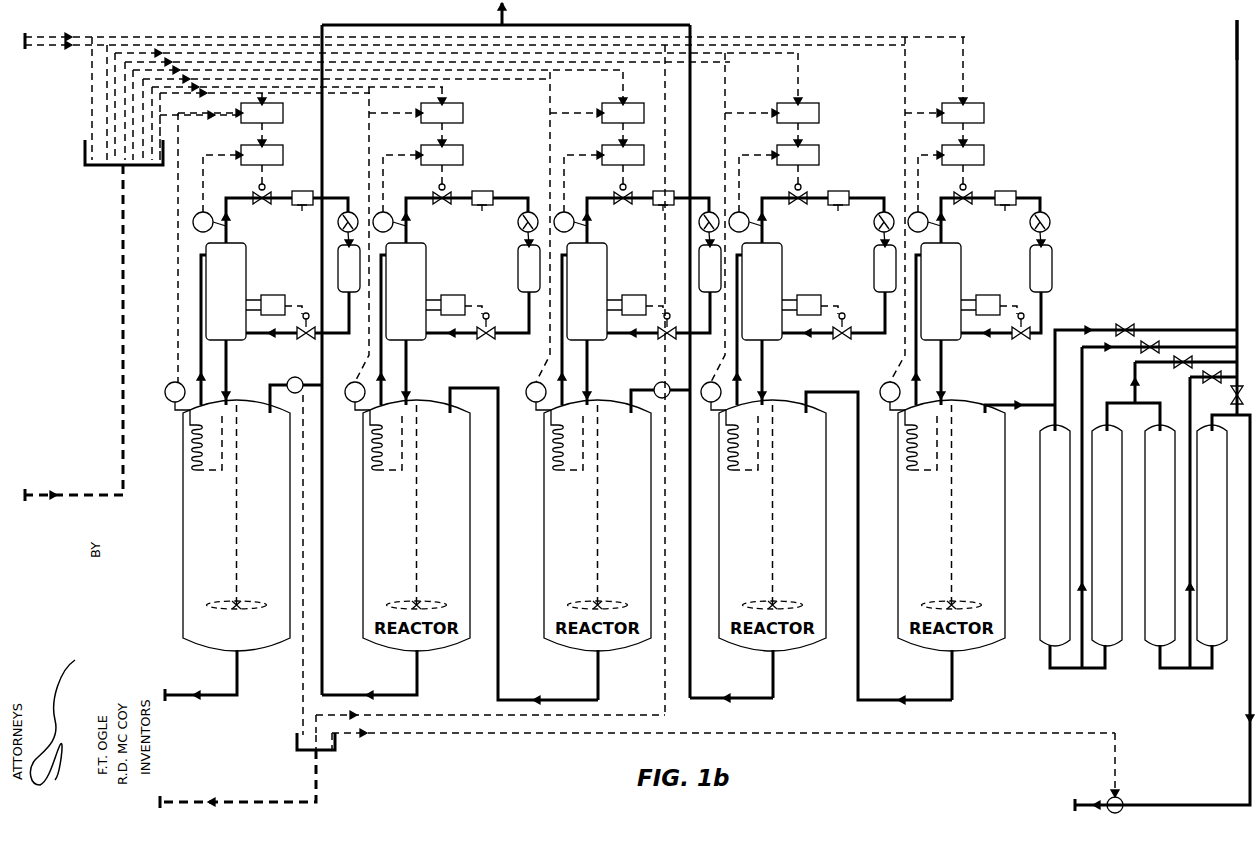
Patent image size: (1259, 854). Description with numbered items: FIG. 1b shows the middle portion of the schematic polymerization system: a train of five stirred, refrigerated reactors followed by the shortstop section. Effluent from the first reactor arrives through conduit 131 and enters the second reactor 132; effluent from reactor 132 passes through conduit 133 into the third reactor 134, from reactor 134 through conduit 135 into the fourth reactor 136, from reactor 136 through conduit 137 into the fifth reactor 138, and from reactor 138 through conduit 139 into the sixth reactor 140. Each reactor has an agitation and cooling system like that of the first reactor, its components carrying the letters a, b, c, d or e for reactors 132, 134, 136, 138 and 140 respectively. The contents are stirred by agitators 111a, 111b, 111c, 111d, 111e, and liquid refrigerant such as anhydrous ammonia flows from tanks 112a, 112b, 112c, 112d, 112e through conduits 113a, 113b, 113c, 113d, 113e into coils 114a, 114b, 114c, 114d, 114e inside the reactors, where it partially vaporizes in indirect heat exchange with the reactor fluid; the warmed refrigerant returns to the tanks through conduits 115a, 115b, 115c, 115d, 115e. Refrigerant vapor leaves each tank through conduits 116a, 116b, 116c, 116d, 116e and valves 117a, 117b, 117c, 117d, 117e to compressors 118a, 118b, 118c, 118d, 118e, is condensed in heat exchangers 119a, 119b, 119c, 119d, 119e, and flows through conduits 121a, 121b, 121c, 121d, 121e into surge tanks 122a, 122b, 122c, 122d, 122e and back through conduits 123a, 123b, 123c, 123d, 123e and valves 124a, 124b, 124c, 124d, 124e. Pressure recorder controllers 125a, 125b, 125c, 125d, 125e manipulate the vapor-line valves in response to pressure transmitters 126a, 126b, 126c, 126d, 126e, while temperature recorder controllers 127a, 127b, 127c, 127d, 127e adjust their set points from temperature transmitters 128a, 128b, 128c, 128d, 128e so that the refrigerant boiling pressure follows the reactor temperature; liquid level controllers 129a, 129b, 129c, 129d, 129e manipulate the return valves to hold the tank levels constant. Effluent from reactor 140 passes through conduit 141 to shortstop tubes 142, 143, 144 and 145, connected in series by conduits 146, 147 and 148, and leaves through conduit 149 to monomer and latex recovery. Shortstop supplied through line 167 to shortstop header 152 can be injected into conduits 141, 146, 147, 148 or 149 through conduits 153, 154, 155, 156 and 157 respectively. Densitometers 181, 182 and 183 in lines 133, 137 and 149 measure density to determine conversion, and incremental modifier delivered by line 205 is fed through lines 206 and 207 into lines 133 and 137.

The agitator 111a is at (206, 604).
The agitator 111b is at (411, 507).
The agitator 111c is at (592, 507).
The agitator 111d is at (767, 507).
The agitator 111e is at (946, 507).
The tank 112a is at (206, 300).
The tank 112b is at (421, 286).
The tank 112c is at (602, 286).
The tank 112d is at (777, 286).
The tank 112e is at (965, 291).
The conduit 113a is at (227, 350).
The conduit 113b is at (426, 372).
The conduit 113c is at (607, 372).
The conduit 113d is at (782, 372).
The conduit 113e is at (967, 372).
The coil 114a is at (193, 448).
The coil 114b is at (390, 470).
The coil 114c is at (571, 470).
The coil 114d is at (746, 470).
The coil 114e is at (900, 460).
The conduit 115a is at (201, 333).
The conduit 115b is at (416, 330).
The conduit 115c is at (597, 330).
The conduit 115d is at (772, 330).
The conduit 115e is at (954, 330).
The conduit 116a is at (253, 194).
The conduit 116b is at (419, 188).
The conduit 116c is at (600, 188).
The conduit 116d is at (775, 188).
The conduit 116e is at (975, 211).
The valve 117a is at (266, 190).
The valve 117b is at (469, 175).
The valve 117c is at (650, 175).
The valve 117d is at (825, 175).
The valve 117e is at (991, 176).
The compressor 118a is at (293, 204).
The compressor 118b is at (496, 194).
The compressor 118c is at (677, 194).
The compressor 118d is at (852, 194).
The compressor 118e is at (1031, 194).
The indirect heat exchanger 119a is at (339, 226).
The indirect heat exchanger 119b is at (507, 222).
The indirect heat exchanger 119c is at (688, 222).
The indirect heat exchanger 119d is at (863, 222).
The indirect heat exchanger 119e is at (1067, 220).
The conduit 121a is at (346, 240).
The conduit 121b is at (502, 241).
The conduit 121c is at (683, 241).
The conduit 121d is at (858, 241).
The conduit 121e is at (1071, 238).
The surge tank 122a is at (338, 266).
The surge tank 122b is at (502, 268).
The surge tank 122c is at (683, 268).
The surge tank 122d is at (858, 268).
The surge tank 122e is at (1068, 268).
The conduit 123a is at (352, 338).
The conduit 123b is at (478, 324).
The conduit 123c is at (658, 324).
The conduit 123d is at (834, 324).
The conduit 123e is at (1030, 314).
The valve 124a is at (304, 338).
The valve 124b is at (488, 312).
The valve 124c is at (668, 312).
The valve 124d is at (844, 312).
The valve 124e is at (1033, 332).
The pressure recorder controller 125a is at (283, 149).
The pressure recorder controller 125b is at (465, 144).
The pressure recorder controller 125c is at (645, 144).
The pressure recorder controller 125d is at (821, 144).
The pressure recorder controller 125e is at (986, 144).
The pressure transmitter 126a is at (193, 224).
The pressure transmitter 126b is at (450, 220).
The pressure transmitter 126c is at (631, 220).
The pressure transmitter 126d is at (806, 220).
The pressure transmitter 126e is at (974, 223).
The temperature recorder controller 127a is at (283, 108).
The temperature recorder controller 127b is at (465, 109).
The temperature recorder controller 127c is at (645, 109).
The temperature recorder controller 127d is at (821, 109).
The temperature recorder controller 127e is at (986, 109).
The temperature transmitter 128a is at (166, 398).
The temperature transmitter 128b is at (319, 412).
The temperature transmitter 128c is at (493, 412).
The temperature transmitter 128d is at (669, 412).
The temperature transmitter 128e is at (878, 396).
The liquid level controller 129a is at (268, 295).
The liquid level controller 129b is at (445, 294).
The liquid level controller 129c is at (626, 294).
The liquid level controller 129d is at (801, 294).
The liquid level controller 129e is at (982, 296).
The conduit 131 is at (202, 698).
The second reactor 132 is at (183, 556).
The conduit 133 is at (312, 383).
The third reactor 134 is at (419, 655).
The conduit 135 is at (548, 698).
The fourth reactor 136 is at (600, 655).
The conduit 137 is at (745, 697).
The fifth reactor 138 is at (790, 652).
The conduit 139 is at (856, 697).
The sixth reactor 140 is at (946, 656).
The conduit 141 is at (1052, 400).
The shortstop tube 142 is at (1045, 646).
The shortstop tube 143 is at (1115, 646).
The shortstop tube 144 is at (1150, 649).
The shortstop tube 145 is at (1222, 651).
The conduit 146 is at (1062, 670).
The conduit 147 is at (1126, 403).
The conduit 148 is at (1176, 672).
The conduit 149 is at (1190, 806).
The shortstop header 152 is at (1233, 330).
The conduit 153 is at (1055, 360).
The conduit 154 is at (1083, 364).
The conduit 155 is at (1134, 372).
The conduit 156 is at (1188, 384).
The conduit 157 is at (1233, 403).
The line 167 is at (1235, 44).
The densitometer 181 is at (287, 382).
The densitometer 182 is at (655, 384).
The densitometer 183 is at (1122, 803).
The line 205 is at (505, 5).
The line 206 is at (383, 24).
The line 207 is at (650, 24).